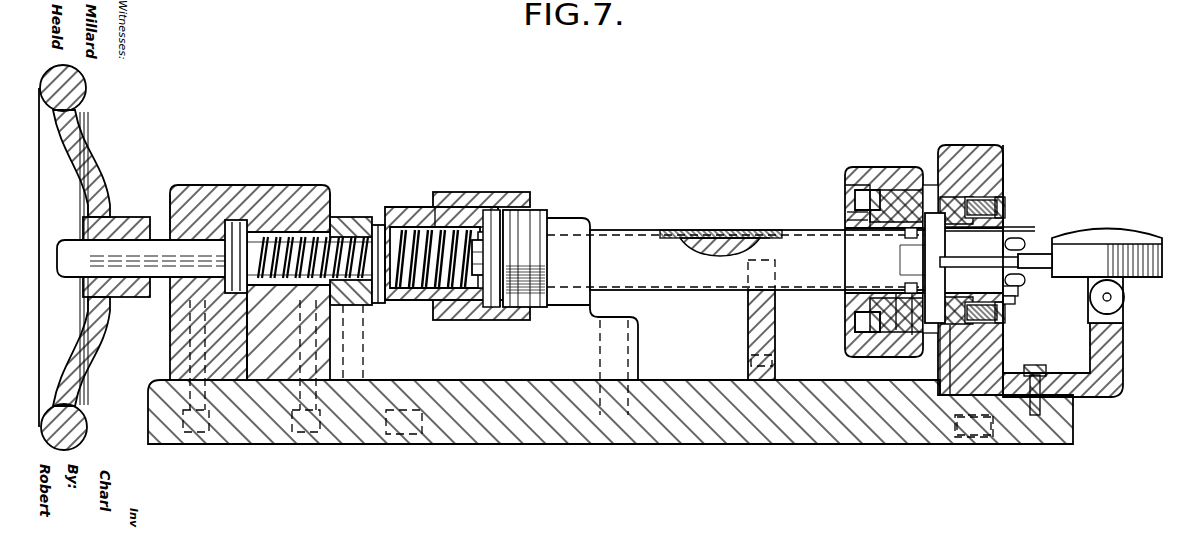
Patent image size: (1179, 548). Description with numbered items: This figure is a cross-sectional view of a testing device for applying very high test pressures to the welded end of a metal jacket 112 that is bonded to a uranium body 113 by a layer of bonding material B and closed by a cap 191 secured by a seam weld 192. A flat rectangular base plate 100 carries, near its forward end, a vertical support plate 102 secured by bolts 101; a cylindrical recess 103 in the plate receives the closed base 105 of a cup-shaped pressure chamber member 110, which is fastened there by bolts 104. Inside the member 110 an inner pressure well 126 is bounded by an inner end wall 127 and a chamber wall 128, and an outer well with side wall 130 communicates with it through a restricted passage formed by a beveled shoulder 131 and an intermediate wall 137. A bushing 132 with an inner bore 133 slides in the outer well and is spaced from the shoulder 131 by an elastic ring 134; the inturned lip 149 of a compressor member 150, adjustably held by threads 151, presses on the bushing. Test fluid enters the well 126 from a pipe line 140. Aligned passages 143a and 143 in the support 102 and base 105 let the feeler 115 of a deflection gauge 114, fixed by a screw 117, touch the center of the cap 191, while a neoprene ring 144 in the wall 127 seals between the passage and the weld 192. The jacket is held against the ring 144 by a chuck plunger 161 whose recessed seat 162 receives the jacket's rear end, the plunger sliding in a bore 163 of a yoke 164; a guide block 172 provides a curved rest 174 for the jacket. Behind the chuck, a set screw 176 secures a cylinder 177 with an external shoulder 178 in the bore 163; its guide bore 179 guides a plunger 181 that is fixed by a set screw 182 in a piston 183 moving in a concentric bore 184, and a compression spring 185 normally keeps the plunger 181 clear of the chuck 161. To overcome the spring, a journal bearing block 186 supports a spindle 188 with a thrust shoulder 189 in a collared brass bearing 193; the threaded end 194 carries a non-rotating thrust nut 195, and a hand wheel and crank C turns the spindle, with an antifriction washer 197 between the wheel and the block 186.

The base plate 100 is at (708, 425).
The bolts 101 is at (975, 448).
The vertical support plate 102 is at (1010, 362).
The cylindrical recess 103 is at (978, 150).
The bolts 104 is at (1006, 208).
The cylindrical base or closed end 105 is at (1012, 299).
The pressure chamber member 110 is at (932, 186).
The jacket 112 is at (692, 216).
The uranium body 113 is at (740, 233).
The deflection gauge 114 is at (1140, 272).
The feeler 115 is at (1022, 238).
The screw 117 is at (1047, 406).
The inner cylindrical pressure well 126 is at (930, 325).
The inner end wall 127 is at (950, 397).
The inner cylindrical pressure chamber wall 128 is at (940, 397).
The cylindrical side wall 130 is at (857, 334).
The conically beveled shoulder 131 is at (882, 334).
The cylindrical bushing 132 is at (852, 302).
The inner bore 133 is at (845, 188).
The elastic annular ring 134 is at (870, 172).
The intermediate cylindrical wall 137 is at (896, 332).
The fluid pressure pipe line 140 is at (1030, 256).
The cylindrical passage 143 is at (1025, 226).
The cylindrical passage 143a is at (1022, 230).
The annular neoprene ring 144 is at (1018, 290).
The inturned annular lip 149 is at (845, 222).
The cylindrical compressor member 150 is at (845, 203).
The cooperating threads 151 is at (912, 337).
The chuck plunger 161 is at (535, 215).
The recessed seat 162 is at (562, 213).
The cylindrical bore 163 is at (501, 210).
The yoke 164 is at (487, 210).
The guide block 172 is at (776, 325).
The curved support rest 174 is at (748, 293).
The set screw 176 is at (462, 192).
The cylinder 177 is at (405, 215).
The external annular shoulder 178 is at (432, 207).
The guide bore 179 is at (482, 302).
The plunger 181 is at (490, 302).
The set screw 182 is at (372, 215).
The piston 183 is at (338, 217).
The concentric cylindrical bore 184 is at (378, 226).
The compression spring 185 is at (450, 302).
The journal bearing block 186 is at (168, 198).
The spindle 188 is at (118, 250).
The thrust shoulder 189 is at (232, 220).
The cap 191 is at (920, 257).
The seam weld 192 is at (908, 237).
The collared brass bearing 193 is at (200, 187).
The threaded forward end 194 is at (262, 232).
The thrust nut 195 is at (282, 234).
The antifriction washer 197 is at (160, 298).
The bonding material layer B is at (730, 221).
The hand wheel and crank C is at (78, 95).